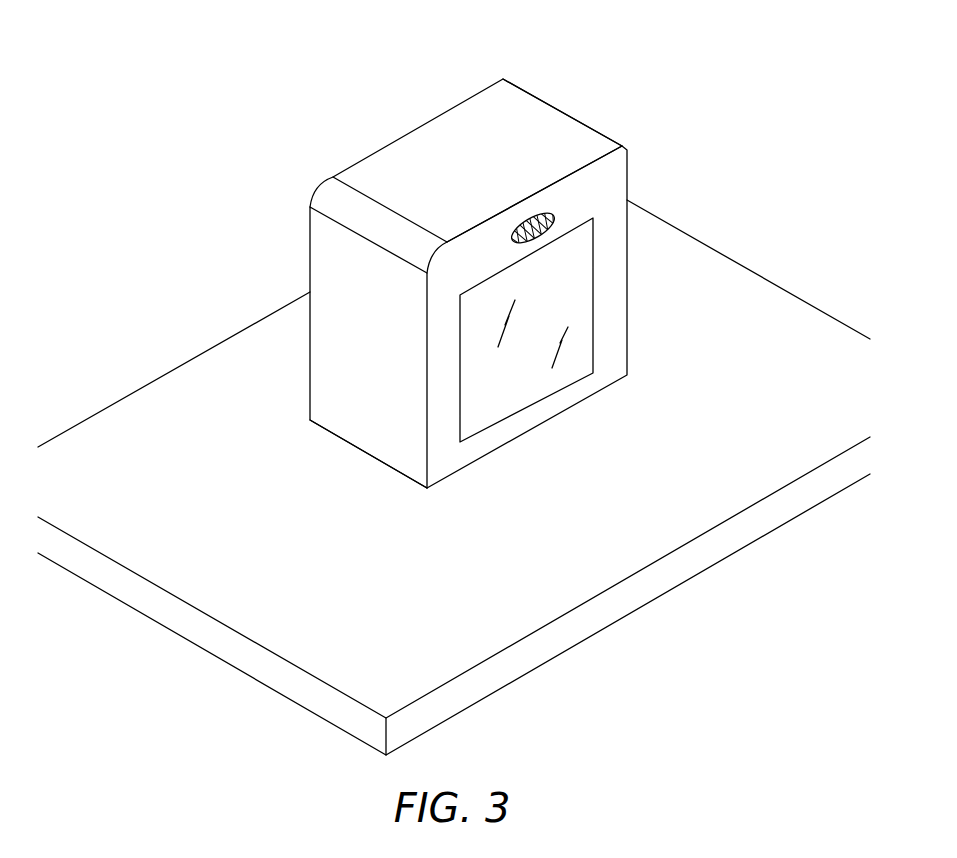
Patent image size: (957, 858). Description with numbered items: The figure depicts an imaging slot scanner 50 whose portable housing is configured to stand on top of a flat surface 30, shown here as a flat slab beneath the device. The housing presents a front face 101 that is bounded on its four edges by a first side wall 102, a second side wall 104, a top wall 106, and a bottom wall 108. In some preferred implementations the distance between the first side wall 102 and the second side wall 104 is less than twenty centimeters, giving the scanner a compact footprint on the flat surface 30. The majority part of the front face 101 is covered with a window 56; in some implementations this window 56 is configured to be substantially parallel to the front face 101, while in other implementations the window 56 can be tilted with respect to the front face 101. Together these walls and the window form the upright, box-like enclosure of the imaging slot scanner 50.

The flat surface 30 is at (788, 296).
The imaging slot scanner 50 is at (501, 251).
The window 56 is at (578, 255).
The front face 101 is at (613, 181).
The first side wall 102 is at (320, 254).
The second side wall 104 is at (580, 121).
The top wall 106 is at (375, 166).
The bottom wall 108 is at (378, 458).